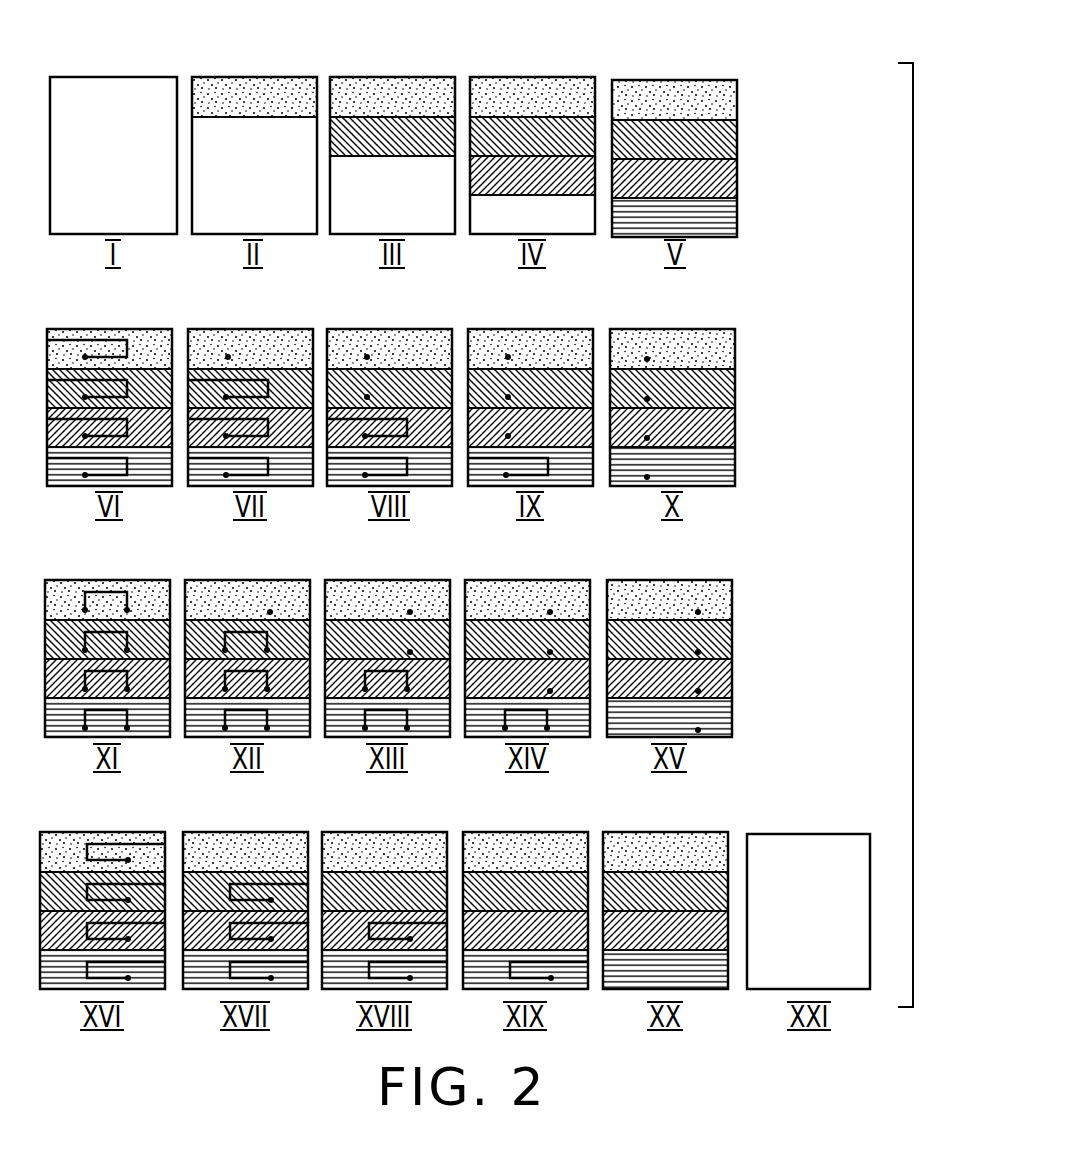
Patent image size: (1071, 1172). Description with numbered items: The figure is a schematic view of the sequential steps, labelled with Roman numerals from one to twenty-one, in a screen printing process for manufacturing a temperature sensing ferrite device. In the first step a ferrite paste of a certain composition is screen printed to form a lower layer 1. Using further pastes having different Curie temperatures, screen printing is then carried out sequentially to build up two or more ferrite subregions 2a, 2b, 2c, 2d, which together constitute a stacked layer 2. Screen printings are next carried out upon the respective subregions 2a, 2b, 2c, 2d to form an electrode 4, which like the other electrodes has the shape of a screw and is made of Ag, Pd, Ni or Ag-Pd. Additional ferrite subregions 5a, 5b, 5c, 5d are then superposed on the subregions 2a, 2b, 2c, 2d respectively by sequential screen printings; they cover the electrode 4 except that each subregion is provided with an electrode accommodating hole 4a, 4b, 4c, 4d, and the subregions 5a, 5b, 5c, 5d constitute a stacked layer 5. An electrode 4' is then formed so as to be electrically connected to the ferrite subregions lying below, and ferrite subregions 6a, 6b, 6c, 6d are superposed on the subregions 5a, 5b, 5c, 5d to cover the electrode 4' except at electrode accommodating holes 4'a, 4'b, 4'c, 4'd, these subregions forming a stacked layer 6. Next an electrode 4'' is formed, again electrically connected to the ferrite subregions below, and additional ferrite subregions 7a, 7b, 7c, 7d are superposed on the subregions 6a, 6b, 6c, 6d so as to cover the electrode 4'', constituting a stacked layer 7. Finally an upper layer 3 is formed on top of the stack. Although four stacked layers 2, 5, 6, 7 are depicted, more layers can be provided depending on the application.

The lower layer 1 is at (147, 97).
The stacked layer 2 is at (715, 130).
The ferrite subregion 2a is at (718, 100).
The ferrite subregion 2b is at (713, 140).
The ferrite subregion 2c is at (713, 182).
The ferrite subregion 2d is at (713, 222).
The upper layer 3 is at (800, 850).
The electrode 4 is at (109, 382).
The electrode accommodating hole 4a is at (647, 359).
The electrode accommodating hole 4b is at (647, 399).
The electrode accommodating hole 4c is at (647, 438).
The electrode accommodating hole 4d is at (647, 477).
The stacked layer 5 is at (743, 389).
The ferrite subregion 5a is at (718, 345).
The ferrite subregion 5b is at (735, 383).
The ferrite subregion 5c is at (722, 423).
The ferrite subregion 5d is at (722, 458).
The electrode 4' is at (107, 634).
The electrode accommodating hole 4'a is at (789, 608).
The electrode accommodating hole 4'b is at (786, 650).
The electrode accommodating hole 4'c is at (790, 680).
The electrode accommodating hole 4'd is at (801, 730).
The stacked layer 6 is at (757, 638).
The ferrite subregion 6a is at (715, 590).
The ferrite subregion 6b is at (725, 640).
The ferrite subregion 6c is at (722, 680).
The ferrite subregion 6d is at (715, 722).
The electrode 4'' is at (102, 883).
The stacked layer 7 is at (684, 905).
The ferrite subregion 7a is at (712, 850).
The ferrite subregion 7b is at (612, 888).
The ferrite subregion 7c is at (718, 932).
The ferrite subregion 7d is at (620, 972).